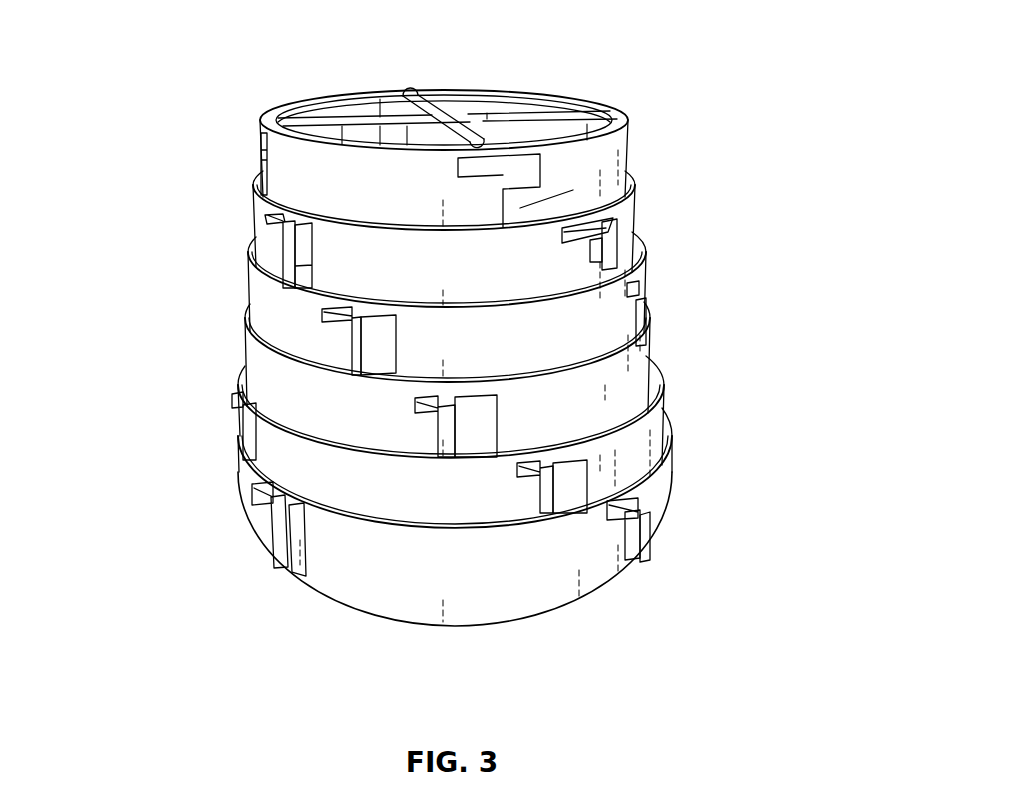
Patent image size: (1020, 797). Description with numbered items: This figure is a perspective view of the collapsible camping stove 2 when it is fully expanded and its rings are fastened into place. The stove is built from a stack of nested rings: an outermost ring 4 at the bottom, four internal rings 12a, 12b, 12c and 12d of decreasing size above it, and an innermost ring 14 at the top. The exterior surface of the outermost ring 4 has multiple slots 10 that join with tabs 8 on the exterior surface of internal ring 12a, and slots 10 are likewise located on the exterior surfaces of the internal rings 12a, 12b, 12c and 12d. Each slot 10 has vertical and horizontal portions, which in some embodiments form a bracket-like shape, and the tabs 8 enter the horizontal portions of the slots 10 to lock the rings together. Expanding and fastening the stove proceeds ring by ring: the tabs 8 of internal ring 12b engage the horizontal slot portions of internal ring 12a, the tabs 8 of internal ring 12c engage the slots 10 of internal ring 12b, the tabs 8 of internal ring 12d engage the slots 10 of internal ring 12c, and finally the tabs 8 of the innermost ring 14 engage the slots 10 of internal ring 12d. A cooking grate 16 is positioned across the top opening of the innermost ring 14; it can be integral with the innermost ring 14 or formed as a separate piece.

The collapsible camping stove 2 is at (733, 411).
The outermost ring 4 is at (542, 618).
The tab 8 is at (263, 147).
The slot 10 is at (307, 265).
The internal ring 12a is at (270, 435).
The internal ring 12b is at (270, 378).
The internal ring 12c is at (270, 312).
The internal ring 12d is at (260, 202).
The innermost ring 14 is at (620, 167).
The cooking grate 16 is at (435, 107).